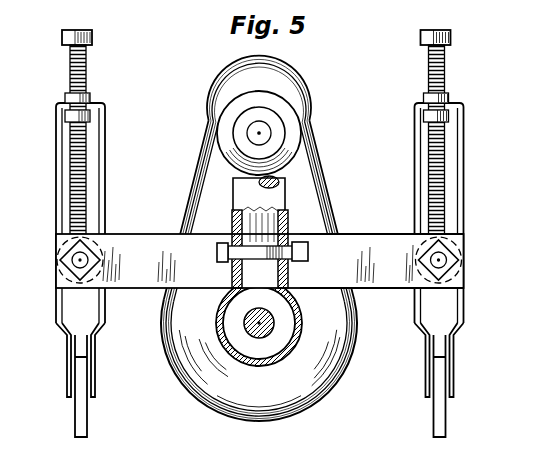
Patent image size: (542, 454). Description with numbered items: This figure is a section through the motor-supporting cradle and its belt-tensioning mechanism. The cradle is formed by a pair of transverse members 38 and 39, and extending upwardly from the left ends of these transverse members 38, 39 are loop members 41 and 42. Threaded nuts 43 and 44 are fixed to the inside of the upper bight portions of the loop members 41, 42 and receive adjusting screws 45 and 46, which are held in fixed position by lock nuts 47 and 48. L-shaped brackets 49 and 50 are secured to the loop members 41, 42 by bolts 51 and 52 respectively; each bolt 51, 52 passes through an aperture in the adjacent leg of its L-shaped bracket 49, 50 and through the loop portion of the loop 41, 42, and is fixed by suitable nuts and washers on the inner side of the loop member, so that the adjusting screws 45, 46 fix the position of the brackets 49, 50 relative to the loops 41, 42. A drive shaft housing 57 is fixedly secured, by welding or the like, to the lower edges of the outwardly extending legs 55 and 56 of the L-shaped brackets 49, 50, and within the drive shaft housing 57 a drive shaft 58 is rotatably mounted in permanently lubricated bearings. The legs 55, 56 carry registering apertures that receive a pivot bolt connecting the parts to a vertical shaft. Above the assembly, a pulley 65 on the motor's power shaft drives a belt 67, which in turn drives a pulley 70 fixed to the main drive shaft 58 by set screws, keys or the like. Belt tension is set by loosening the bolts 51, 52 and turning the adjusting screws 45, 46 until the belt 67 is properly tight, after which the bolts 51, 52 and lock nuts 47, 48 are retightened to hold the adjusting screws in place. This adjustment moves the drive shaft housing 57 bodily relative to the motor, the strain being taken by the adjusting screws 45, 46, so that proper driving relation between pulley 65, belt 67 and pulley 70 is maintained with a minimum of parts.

The transverse member 38 is at (87, 428).
The transverse member 39 is at (438, 414).
The loop member 41 is at (56, 182).
The loop member 42 is at (463, 184).
The threaded nut 43 is at (90, 115).
The threaded nut 44 is at (424, 117).
The adjusting screw 45 is at (86, 72).
The adjusting screw 46 is at (430, 70).
The lock nut 47 is at (90, 97).
The lock nut 48 is at (424, 97).
The L-shaped bracket 49 is at (142, 278).
The L-shaped bracket 50 is at (382, 280).
The bolt 51 is at (60, 256).
The bolt 52 is at (450, 270).
The outwardly extending leg 55 is at (232, 273).
The outwardly extending leg 56 is at (290, 273).
The drive shaft housing 57 is at (267, 363).
The drive shaft 58 is at (250, 330).
The pulley 65 is at (281, 105).
The belt 67 is at (318, 181).
The pulley 70 is at (330, 373).